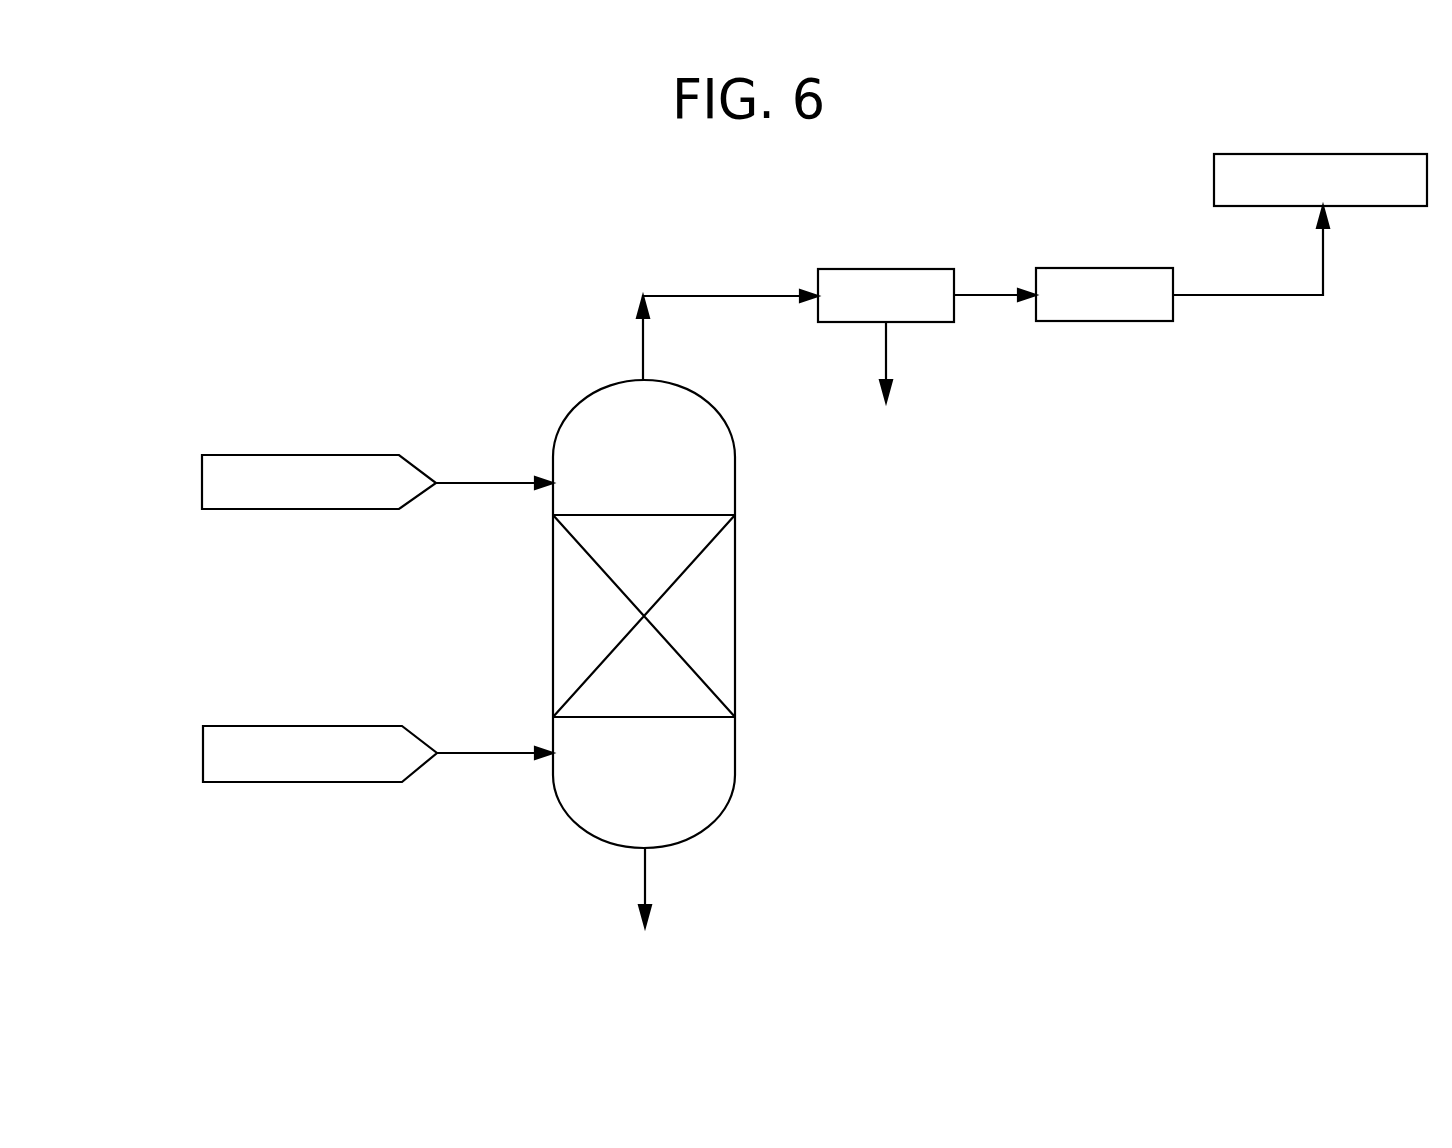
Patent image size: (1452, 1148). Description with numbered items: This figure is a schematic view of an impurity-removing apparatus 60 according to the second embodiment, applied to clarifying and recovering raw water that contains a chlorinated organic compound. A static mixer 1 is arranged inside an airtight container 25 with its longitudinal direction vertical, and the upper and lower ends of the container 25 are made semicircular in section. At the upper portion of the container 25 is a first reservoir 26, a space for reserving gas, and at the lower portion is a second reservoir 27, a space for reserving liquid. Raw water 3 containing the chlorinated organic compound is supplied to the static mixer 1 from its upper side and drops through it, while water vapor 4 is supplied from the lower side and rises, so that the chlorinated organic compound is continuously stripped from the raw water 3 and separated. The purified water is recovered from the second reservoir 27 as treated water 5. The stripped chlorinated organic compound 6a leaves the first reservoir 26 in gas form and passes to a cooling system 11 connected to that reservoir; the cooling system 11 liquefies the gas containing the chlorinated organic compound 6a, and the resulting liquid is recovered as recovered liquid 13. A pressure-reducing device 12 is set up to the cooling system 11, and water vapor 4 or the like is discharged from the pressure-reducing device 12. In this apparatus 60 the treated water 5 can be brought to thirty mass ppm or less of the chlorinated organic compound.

The static mixer 1 is at (722, 678).
The raw water 3 is at (340, 455).
The water vapor 4 is at (343, 726).
The treated water 5 is at (645, 885).
The chlorinated organic compound 6a is at (643, 353).
The cooling system 11 is at (888, 269).
The pressure-reducing device 12 is at (1106, 268).
The recovered liquid 13 is at (887, 357).
The airtight container 25 is at (735, 478).
The first reservoir 26 is at (602, 418).
The second reservoir 27 is at (712, 782).
The impurity-removing apparatus 60 is at (719, 601).